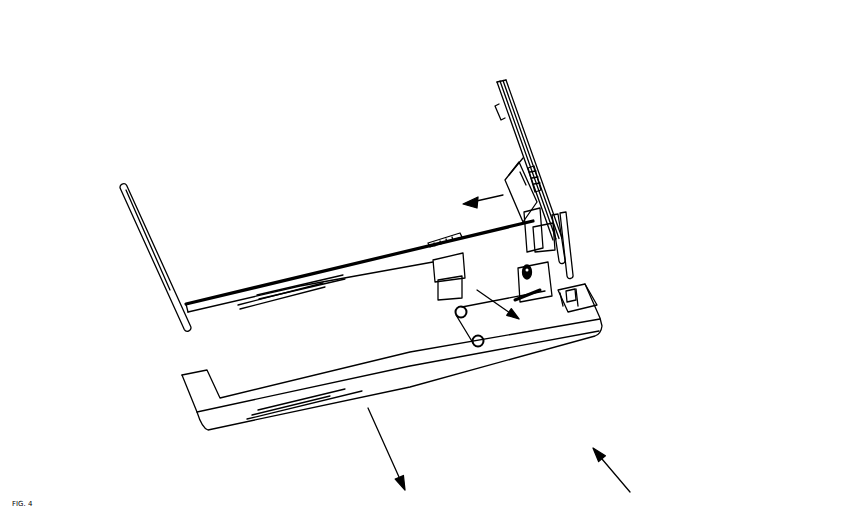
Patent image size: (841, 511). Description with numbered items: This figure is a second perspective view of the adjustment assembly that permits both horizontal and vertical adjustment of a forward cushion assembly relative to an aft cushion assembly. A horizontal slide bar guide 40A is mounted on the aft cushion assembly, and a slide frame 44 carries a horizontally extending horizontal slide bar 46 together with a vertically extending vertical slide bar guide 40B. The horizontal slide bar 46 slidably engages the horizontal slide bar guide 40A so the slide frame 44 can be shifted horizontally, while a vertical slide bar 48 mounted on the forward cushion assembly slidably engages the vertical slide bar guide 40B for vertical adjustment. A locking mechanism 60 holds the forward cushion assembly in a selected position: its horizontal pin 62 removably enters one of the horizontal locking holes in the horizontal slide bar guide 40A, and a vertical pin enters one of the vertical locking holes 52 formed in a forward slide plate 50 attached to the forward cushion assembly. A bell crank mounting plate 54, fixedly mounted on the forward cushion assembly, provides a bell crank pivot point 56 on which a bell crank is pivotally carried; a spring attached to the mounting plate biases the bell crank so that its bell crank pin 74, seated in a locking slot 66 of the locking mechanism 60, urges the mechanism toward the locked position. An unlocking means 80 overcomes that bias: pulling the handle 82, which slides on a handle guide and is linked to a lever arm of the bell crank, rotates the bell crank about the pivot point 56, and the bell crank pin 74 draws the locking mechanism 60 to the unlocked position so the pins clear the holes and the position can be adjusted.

The horizontal slide bar guide 40A is at (525, 128).
The vertical slide bar guide 40B is at (437, 253).
The slide frame 44 is at (343, 268).
The horizontal slide bar 46 is at (500, 118).
The vertical slide bar 48 is at (440, 300).
The forward slide plate 50 is at (572, 243).
The vertical locking holes 52 is at (567, 240).
The bell crank mounting plate 54 is at (541, 284).
The bell crank pivot point 56 is at (553, 258).
The locking mechanism 60 is at (505, 182).
The horizontal pin 62 is at (517, 143).
The locking slot 66 is at (528, 212).
The bell crank pin 74 is at (562, 228).
The unlocking means 80 is at (621, 478).
The handle 82 is at (418, 370).